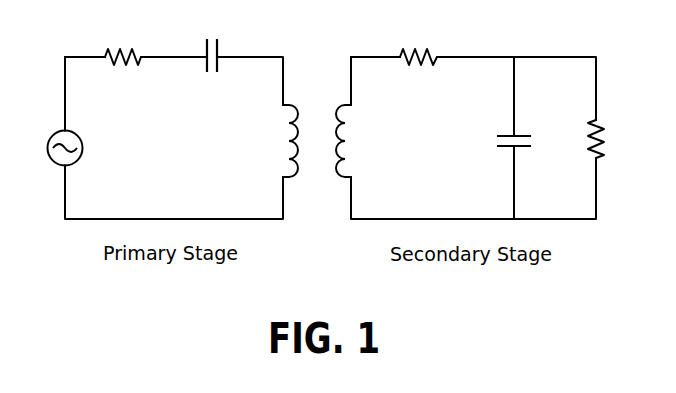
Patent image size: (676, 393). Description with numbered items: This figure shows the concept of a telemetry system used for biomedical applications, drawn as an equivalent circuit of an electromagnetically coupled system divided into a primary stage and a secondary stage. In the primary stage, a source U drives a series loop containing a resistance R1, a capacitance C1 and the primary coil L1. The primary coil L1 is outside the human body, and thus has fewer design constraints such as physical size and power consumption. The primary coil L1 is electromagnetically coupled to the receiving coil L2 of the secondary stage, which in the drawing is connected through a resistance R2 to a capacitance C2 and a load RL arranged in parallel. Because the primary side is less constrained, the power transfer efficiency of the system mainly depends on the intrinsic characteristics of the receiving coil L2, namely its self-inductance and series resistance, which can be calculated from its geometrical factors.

The AC voltage source U is at (50, 148).
The primary stage resistor R1 is at (123, 41).
The primary stage capacitor C1 is at (224, 44).
The primary coil L1 is at (273, 141).
The receiving coil L2 is at (357, 141).
The secondary stage resistor R2 is at (419, 41).
The secondary stage capacitor C2 is at (498, 140).
The load resistor RL is at (609, 139).